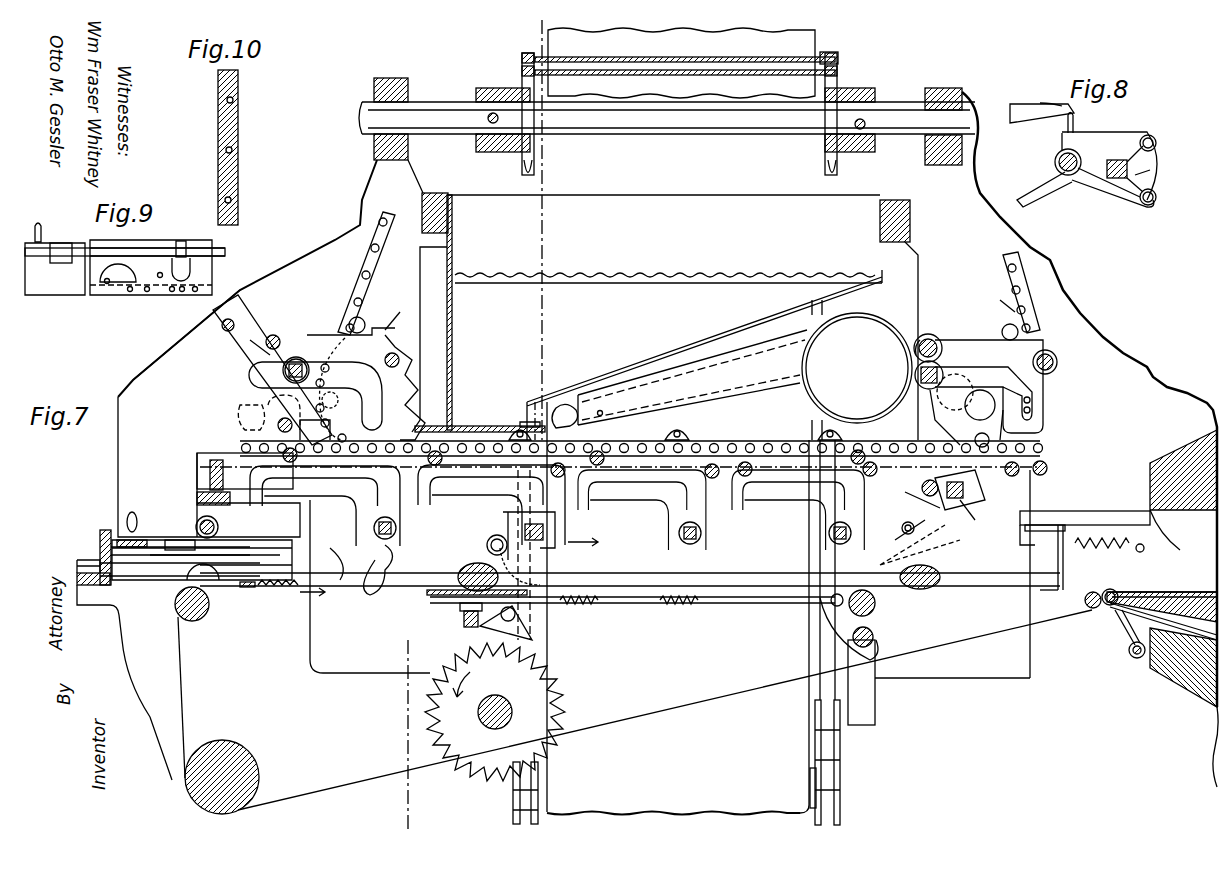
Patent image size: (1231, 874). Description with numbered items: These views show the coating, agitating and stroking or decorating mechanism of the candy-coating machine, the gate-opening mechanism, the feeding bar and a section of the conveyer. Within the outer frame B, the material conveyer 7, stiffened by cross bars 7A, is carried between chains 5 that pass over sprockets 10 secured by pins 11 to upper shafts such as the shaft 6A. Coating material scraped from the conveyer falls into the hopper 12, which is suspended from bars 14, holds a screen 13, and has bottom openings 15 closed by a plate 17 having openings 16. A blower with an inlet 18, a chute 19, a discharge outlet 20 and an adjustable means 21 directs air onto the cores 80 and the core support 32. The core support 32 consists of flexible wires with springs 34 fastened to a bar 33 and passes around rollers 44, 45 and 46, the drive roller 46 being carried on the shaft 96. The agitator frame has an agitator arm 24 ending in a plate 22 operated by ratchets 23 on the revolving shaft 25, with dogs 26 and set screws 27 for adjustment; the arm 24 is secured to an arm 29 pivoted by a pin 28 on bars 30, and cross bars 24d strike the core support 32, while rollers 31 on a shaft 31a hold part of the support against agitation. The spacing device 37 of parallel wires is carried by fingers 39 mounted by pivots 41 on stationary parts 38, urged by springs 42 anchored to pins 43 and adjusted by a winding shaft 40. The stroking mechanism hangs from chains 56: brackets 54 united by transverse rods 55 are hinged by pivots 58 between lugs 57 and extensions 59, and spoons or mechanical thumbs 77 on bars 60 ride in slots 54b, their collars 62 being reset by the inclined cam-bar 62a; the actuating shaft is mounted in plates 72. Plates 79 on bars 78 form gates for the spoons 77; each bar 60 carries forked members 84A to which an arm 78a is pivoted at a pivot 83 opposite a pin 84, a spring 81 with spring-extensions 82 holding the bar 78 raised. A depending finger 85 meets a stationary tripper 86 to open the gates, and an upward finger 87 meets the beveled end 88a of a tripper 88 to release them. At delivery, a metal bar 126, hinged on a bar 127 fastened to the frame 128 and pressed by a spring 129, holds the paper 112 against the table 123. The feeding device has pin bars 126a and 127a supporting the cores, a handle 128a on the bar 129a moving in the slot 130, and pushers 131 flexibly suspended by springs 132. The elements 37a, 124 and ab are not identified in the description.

In FIG. 7, the chains 5 is at (522, 58).
In FIG. 7, the shaft 6A is at (965, 100).
In FIG. 10, the material conveyer 7 is at (218, 130).
In FIG. 7, the material conveyer 7 is at (792, 60).
In FIG. 10, the cross bars 7A is at (234, 150).
In FIG. 7, the cross bars 7A is at (828, 56).
In FIG. 7, the sprockets 10 is at (478, 90).
In FIG. 7, the pins 11 is at (488, 118).
In FIG. 7, the hopper 12 is at (600, 385).
In FIG. 7, the screen 13 is at (670, 282).
In FIG. 7, the bars 14 is at (436, 193).
In FIG. 7, the openings 15 is at (518, 432).
In FIG. 7, the openings 16 is at (460, 425).
In FIG. 7, the plate 17 is at (428, 432).
In FIG. 7, the inlet 18 is at (860, 420).
In FIG. 7, the chute 19 is at (692, 377).
In FIG. 7, the discharge outlet 20 is at (578, 426).
In FIG. 7, the adjustable means 21 is at (604, 412).
In FIG. 7, the plate 22 is at (427, 595).
In FIG. 7, the ratchets 23 is at (560, 672).
In FIG. 7, the agitator arm 24 is at (695, 604).
In FIG. 7, the cross bars 24d is at (585, 596).
In FIG. 7, the revolving shaft 25 is at (503, 697).
In FIG. 7, the dogs 26 is at (485, 624).
In FIG. 7, the set screws 27 is at (462, 614).
In FIG. 7, the pin 28 is at (874, 636).
In FIG. 7, the arm 29 is at (872, 662).
In FIG. 7, the bars 30 is at (876, 726).
In FIG. 7, the rollers 31 is at (876, 603).
In FIG. 7, the shaft 31a is at (842, 595).
In FIG. 7, the core support 32 is at (330, 592).
In FIG. 7, the bar 33 is at (247, 588).
In FIG. 7, the springs 34 is at (286, 590).
In FIG. 7, the spacing device 37 is at (728, 574).
In FIG. 7, the bar end 37a is at (345, 536).
In FIG. 7, the stationary parts 38 is at (1075, 511).
In FIG. 7, the fingers 39 is at (1057, 532).
In FIG. 7, the winding shaft 40 is at (196, 526).
In FIG. 7, the pivots 41 is at (1021, 540).
In FIG. 7, the springs 42 is at (1071, 557).
In FIG. 7, the anchorages 43 is at (1138, 550).
In FIG. 7, the roller 44 is at (1088, 606).
In FIG. 7, the roller 45 is at (203, 616).
In FIG. 7, the drive roller 46 is at (250, 760).
In FIG. 7, the brackets 54 is at (398, 500).
In FIG. 7, the slots 54b is at (348, 345).
In FIG. 7, the transverse rods 55 is at (574, 490).
In FIG. 7, the chains 56 is at (362, 285).
In FIG. 7, the lugs 57 is at (372, 342).
In FIG. 7, the pivots 58 is at (365, 318).
In FIG. 7, the extensions 59 is at (965, 338).
In FIG. 8, the bars 60 is at (1117, 160).
In FIG. 7, the bars 60 is at (285, 372).
In FIG. 7, the grooved collars 62 is at (296, 357).
In FIG. 7, the inclined cam-bar 62a is at (258, 345).
In FIG. 7, the plates 72 is at (878, 680).
In FIG. 7, the spoons or mechanical thumbs 77 is at (376, 560).
In FIG. 8, the bars 78 is at (1064, 174).
In FIG. 7, the bars 78 is at (490, 540).
In FIG. 8, the arm 78a is at (1105, 186).
In FIG. 7, the plates 79 is at (540, 558).
In FIG. 7, the cores 80 is at (472, 562).
In FIG. 8, the spring 81 is at (1160, 158).
In FIG. 7, the spring 81 is at (520, 512).
In FIG. 8, the spring-extensions 82 is at (1058, 152).
In FIG. 8, the pivot 83 is at (1156, 197).
In FIG. 8, the pin 84 is at (1153, 138).
In FIG. 7, the pin 84 is at (980, 500).
In FIG. 8, the forked members 84A is at (1145, 172).
In FIG. 8, the finger 85 is at (1030, 190).
In FIG. 7, the finger 85 is at (920, 490).
In FIG. 7, the tripper 86 is at (878, 565).
In FIG. 8, the finger 87 is at (1066, 128).
In FIG. 8, the tripper 88 is at (1010, 118).
In FIG. 8, the beveled end 88a is at (1064, 106).
In FIG. 7, the shaft 96 is at (245, 814).
In FIG. 7, the paper 112 is at (1110, 590).
In FIG. 7, the table 123 is at (1167, 618).
In FIG. 7, the block 124 is at (1160, 506).
In FIG. 7, the metal bar 126 is at (1122, 642).
In FIG. 9, the pin bars 126a is at (108, 286).
In FIG. 7, the pin bars 126a is at (195, 582).
In FIG. 7, the bar 127 is at (1137, 660).
In FIG. 9, the pin bars 127a is at (160, 280).
In FIG. 7, the frame 128 is at (1185, 690).
In FIG. 9, the handle 128a is at (40, 238).
In FIG. 7, the handle 128a is at (132, 512).
In FIG. 7, the spring 129 is at (1115, 622).
In FIG. 9, the bar 129a is at (214, 253).
In FIG. 7, the bar 129a is at (162, 540).
In FIG. 7, the slot 130 is at (202, 560).
In FIG. 9, the pushers 131 is at (200, 262).
In FIG. 7, the pushers 131 is at (165, 577).
In FIG. 9, the springs 132 is at (182, 246).
In FIG. 7, the springs 132 is at (185, 540).
In FIG. 7, the outer frame B is at (155, 375).
In FIG. 7, the piece ab is at (93, 581).